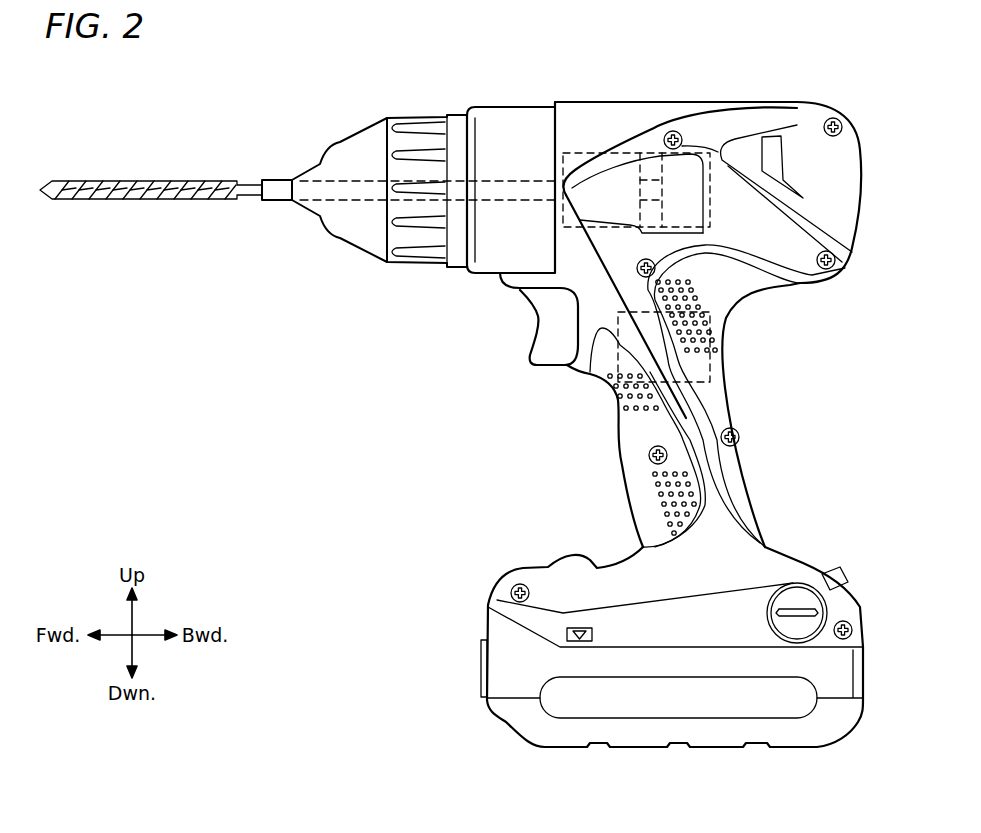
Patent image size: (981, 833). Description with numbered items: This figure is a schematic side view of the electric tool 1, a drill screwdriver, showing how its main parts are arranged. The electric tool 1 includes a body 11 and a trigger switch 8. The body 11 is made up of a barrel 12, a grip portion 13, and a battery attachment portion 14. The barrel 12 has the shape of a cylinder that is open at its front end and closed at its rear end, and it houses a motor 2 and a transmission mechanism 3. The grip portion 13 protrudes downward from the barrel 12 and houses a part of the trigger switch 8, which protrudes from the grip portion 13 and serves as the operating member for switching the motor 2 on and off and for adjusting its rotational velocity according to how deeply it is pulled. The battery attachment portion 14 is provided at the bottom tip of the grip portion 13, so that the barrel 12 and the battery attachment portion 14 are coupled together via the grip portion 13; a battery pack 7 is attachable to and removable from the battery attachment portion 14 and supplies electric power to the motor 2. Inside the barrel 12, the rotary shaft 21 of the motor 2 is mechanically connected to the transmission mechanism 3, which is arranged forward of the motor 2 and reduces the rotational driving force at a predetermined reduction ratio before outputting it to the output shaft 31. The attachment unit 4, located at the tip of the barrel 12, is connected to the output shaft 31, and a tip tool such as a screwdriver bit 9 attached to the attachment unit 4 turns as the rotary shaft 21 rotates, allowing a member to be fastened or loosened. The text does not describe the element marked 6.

The electric tool 1 is at (819, 72).
The motor 2 is at (712, 202).
The transmission mechanism 3 is at (587, 152).
The rotary shaft 21 is at (646, 178).
The output shaft 31 is at (514, 172).
The attachment unit 4 is at (315, 165).
The screwdriver bit 9 is at (173, 182).
The trigger switch 8 is at (546, 354).
The controller 6 is at (712, 360).
The battery pack 7 is at (747, 710).
The body 11 is at (872, 305).
The barrel 12 is at (810, 275).
The grip portion 13 is at (732, 408).
The battery attachment portion 14 is at (720, 610).